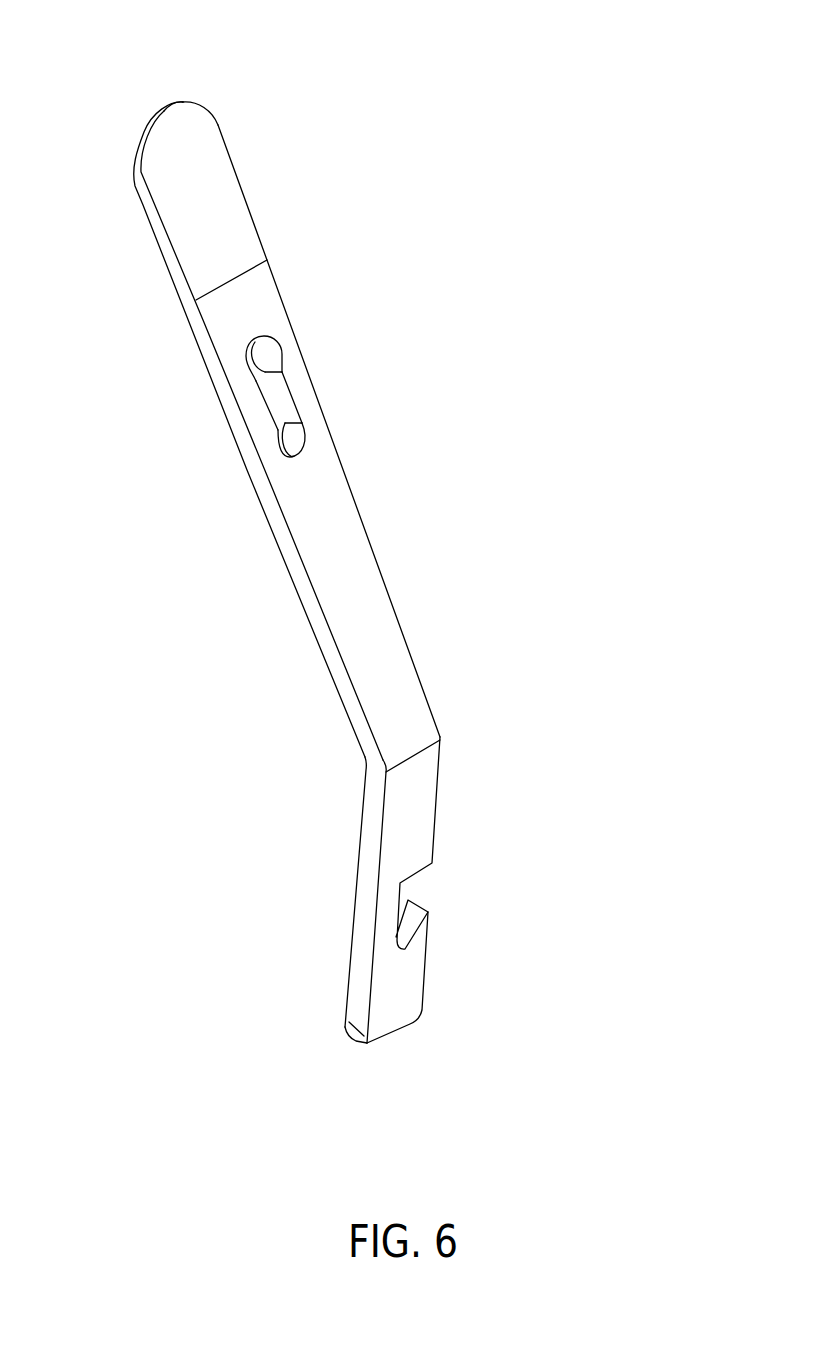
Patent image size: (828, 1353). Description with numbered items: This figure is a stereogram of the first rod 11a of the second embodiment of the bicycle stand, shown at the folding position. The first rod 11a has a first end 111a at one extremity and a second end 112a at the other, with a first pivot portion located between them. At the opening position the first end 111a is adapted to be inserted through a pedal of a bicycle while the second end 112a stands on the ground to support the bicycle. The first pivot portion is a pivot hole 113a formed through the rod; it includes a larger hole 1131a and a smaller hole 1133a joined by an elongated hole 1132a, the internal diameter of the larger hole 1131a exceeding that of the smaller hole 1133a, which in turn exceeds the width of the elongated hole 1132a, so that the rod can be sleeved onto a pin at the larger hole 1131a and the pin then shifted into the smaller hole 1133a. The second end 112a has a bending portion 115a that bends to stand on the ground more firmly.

The first rod 11a is at (429, 518).
The first end 111a is at (208, 86).
The second end 112a is at (352, 1060).
The pivot hole 113a is at (394, 347).
The larger hole 1131a is at (271, 347).
The elongated hole 1132a is at (287, 400).
The smaller hole 1133a is at (298, 443).
The bending portion 115a is at (418, 805).